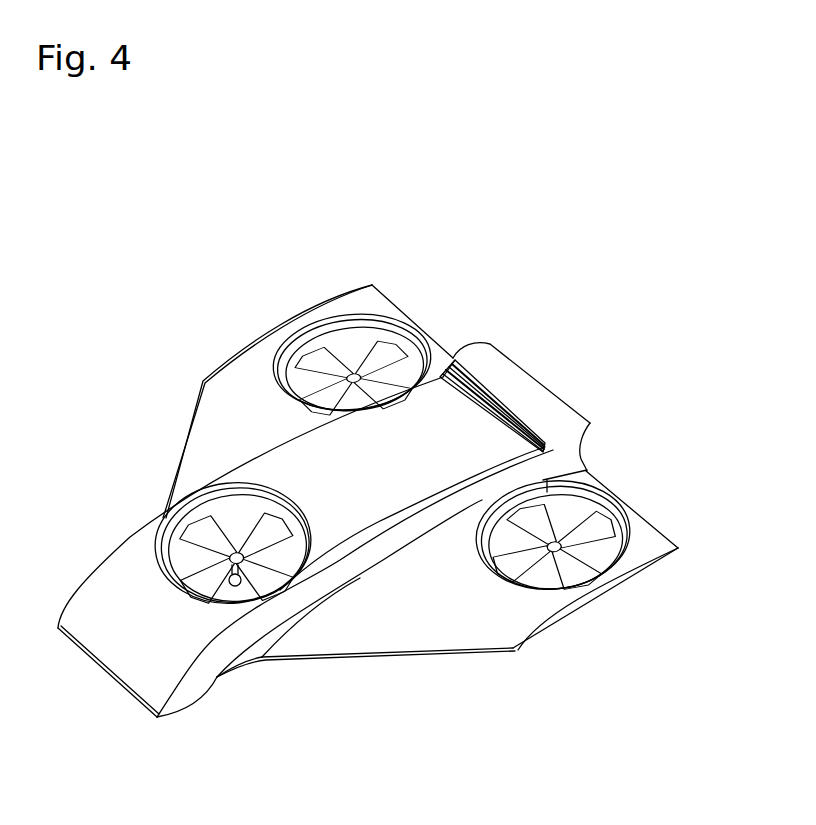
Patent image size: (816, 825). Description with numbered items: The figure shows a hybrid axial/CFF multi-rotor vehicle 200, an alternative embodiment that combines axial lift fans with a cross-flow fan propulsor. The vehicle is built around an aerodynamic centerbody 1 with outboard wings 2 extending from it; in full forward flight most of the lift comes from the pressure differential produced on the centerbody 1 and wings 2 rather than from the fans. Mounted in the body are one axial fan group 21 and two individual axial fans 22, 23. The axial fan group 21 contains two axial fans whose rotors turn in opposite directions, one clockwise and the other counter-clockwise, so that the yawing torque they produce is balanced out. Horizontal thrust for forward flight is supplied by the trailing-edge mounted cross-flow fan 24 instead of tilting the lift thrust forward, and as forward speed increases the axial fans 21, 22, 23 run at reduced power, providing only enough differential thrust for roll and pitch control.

The hybrid axial/CFF multi-rotor vehicle 200 is at (634, 222).
The aerodynamic centerbody 1 is at (130, 633).
The outboard wings 2 is at (228, 400).
The axial fan group 21 is at (207, 540).
The individual axial fan 22 is at (317, 350).
The individual axial fan 23 is at (583, 528).
The cross-flow fan 24 is at (497, 390).